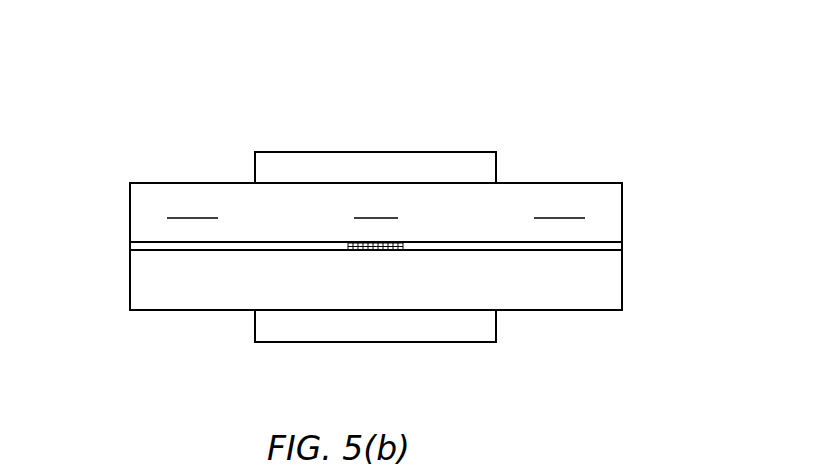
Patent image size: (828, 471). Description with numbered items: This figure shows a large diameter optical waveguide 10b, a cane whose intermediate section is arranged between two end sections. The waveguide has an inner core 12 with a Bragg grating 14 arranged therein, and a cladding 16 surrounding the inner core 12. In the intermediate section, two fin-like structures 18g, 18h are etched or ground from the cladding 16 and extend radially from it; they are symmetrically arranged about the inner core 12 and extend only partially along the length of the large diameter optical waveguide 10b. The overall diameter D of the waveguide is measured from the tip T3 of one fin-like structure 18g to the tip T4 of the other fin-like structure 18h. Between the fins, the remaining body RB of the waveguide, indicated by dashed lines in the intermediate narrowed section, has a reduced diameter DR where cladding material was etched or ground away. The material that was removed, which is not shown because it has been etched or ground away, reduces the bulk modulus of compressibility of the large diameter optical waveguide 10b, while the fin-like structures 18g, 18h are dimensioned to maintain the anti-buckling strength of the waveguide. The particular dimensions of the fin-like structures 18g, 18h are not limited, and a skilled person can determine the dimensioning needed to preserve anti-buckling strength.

The large diameter optical waveguide 10b is at (180, 82).
The inner core 12 is at (617, 246).
The Bragg grating 14 is at (408, 242).
The cladding 16 is at (612, 211).
The fin-like structure 18g is at (489, 165).
The fin-like structure 18h is at (474, 325).
The tip of fin-like structure T3 is at (255, 152).
The tip of fin-like structure T4 is at (255, 342).
The remaining body RB is at (162, 183).
The diameter D is at (255, 342).
The reduced diameter DR is at (87, 183).